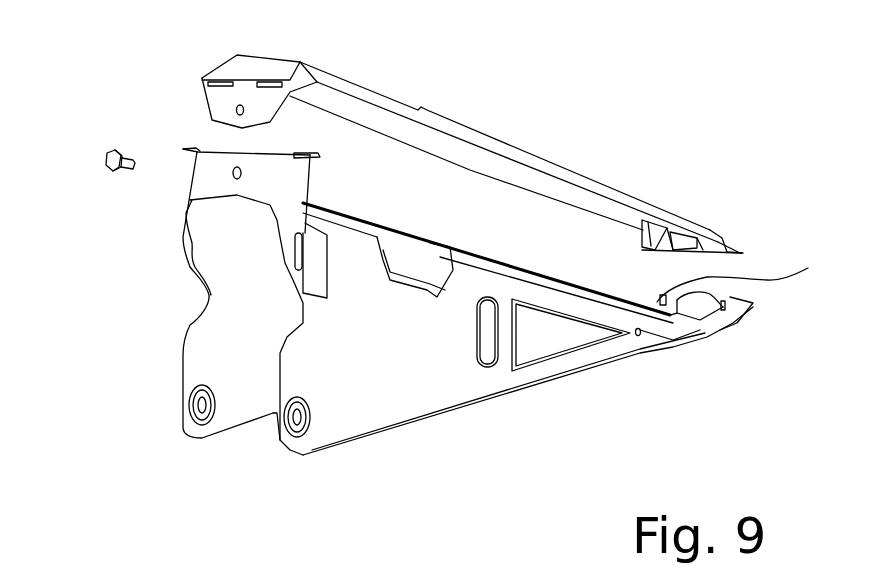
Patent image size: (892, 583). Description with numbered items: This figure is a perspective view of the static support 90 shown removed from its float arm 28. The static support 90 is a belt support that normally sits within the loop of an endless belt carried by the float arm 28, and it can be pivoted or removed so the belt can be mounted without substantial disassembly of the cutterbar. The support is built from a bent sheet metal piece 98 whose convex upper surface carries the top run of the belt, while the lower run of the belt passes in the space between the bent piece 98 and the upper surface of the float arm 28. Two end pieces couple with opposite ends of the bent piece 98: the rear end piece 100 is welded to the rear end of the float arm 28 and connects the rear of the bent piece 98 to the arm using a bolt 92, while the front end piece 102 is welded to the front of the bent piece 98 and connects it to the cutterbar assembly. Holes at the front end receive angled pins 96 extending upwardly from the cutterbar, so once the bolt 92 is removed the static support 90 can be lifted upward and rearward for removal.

The float arm 28 is at (591, 392).
The static support 90 is at (567, 136).
The bolt 92 is at (117, 153).
The angled pins 96 is at (748, 298).
The bent sheet metal piece 98 is at (503, 141).
The end piece 100 is at (190, 178).
The end piece 102 is at (740, 252).